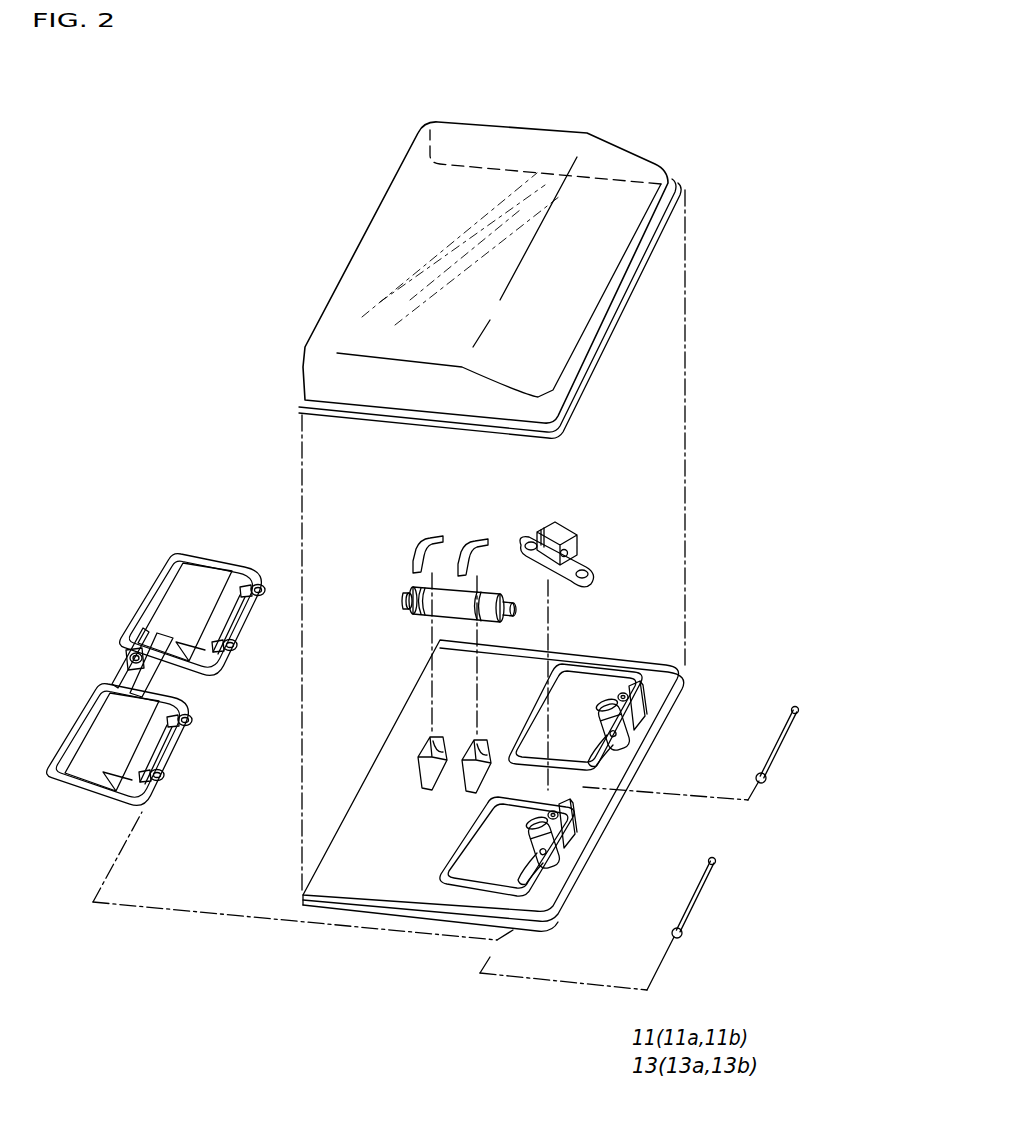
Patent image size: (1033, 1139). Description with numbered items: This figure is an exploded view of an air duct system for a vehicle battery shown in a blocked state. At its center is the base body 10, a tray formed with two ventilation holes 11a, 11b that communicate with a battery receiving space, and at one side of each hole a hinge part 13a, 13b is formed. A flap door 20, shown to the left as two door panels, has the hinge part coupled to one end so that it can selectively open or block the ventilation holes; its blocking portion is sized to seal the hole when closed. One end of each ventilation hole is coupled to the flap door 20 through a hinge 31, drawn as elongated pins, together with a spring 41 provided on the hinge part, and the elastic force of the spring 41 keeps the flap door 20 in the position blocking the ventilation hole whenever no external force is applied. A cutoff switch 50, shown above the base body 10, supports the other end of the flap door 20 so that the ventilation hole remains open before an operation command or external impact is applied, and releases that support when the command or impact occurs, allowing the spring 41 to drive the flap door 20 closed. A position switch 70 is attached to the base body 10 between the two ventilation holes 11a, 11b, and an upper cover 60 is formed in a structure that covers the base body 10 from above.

The base body 10 is at (398, 760).
The ventilation hole 11a is at (587, 695).
The ventilation hole 11b is at (477, 868).
The hinge part 13a is at (623, 735).
The hinge part 13b is at (558, 870).
The flap door 20 is at (182, 570).
The hinge 31 is at (782, 750).
The spring 41 is at (565, 840).
The cutoff switch 50 is at (408, 590).
The upper cover 60 is at (501, 147).
The position switch 70 is at (563, 530).